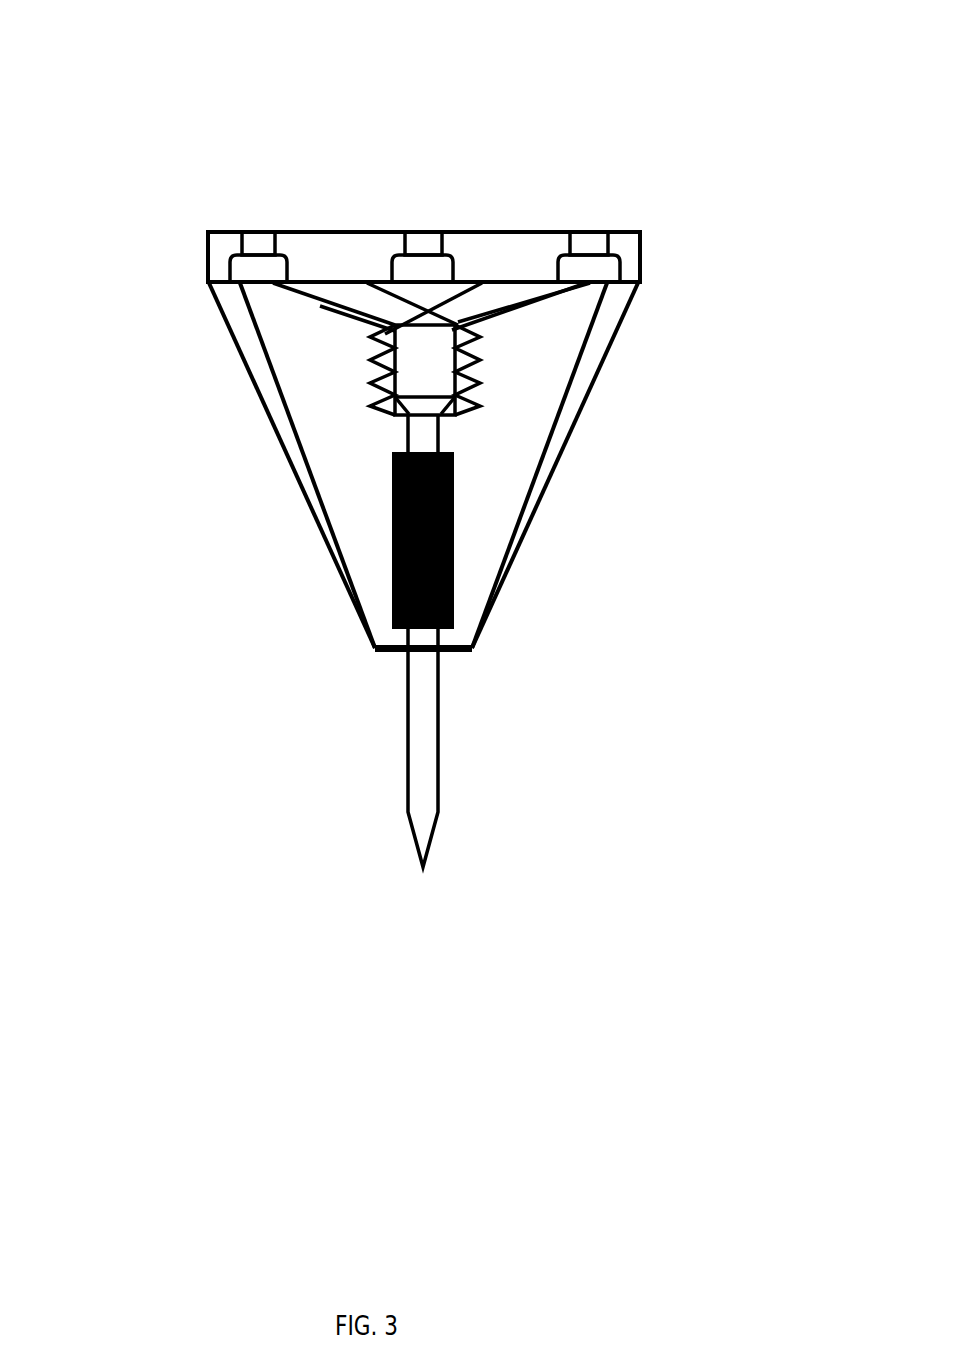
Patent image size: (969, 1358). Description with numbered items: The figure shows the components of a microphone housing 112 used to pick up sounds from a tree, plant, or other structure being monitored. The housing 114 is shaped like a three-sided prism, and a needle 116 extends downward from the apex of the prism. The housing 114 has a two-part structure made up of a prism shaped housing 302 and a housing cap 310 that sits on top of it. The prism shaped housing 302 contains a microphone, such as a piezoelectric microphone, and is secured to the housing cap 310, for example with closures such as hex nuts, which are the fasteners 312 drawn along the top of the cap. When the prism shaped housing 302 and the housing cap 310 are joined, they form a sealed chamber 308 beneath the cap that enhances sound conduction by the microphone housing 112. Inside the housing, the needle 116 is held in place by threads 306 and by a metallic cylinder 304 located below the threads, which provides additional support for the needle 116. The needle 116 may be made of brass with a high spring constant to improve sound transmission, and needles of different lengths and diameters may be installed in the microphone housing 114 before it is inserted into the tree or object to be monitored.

The microphone housing 112 is at (565, 50).
The housing 114 is at (454, 488).
The needle 116 is at (392, 765).
The prism shaped housing 302 is at (510, 577).
The metallic cylinder 304 is at (375, 530).
The threads 306 is at (355, 368).
The sealed chamber 308 is at (353, 295).
The housing cap 310 is at (517, 230).
The fasteners 312 is at (227, 265).